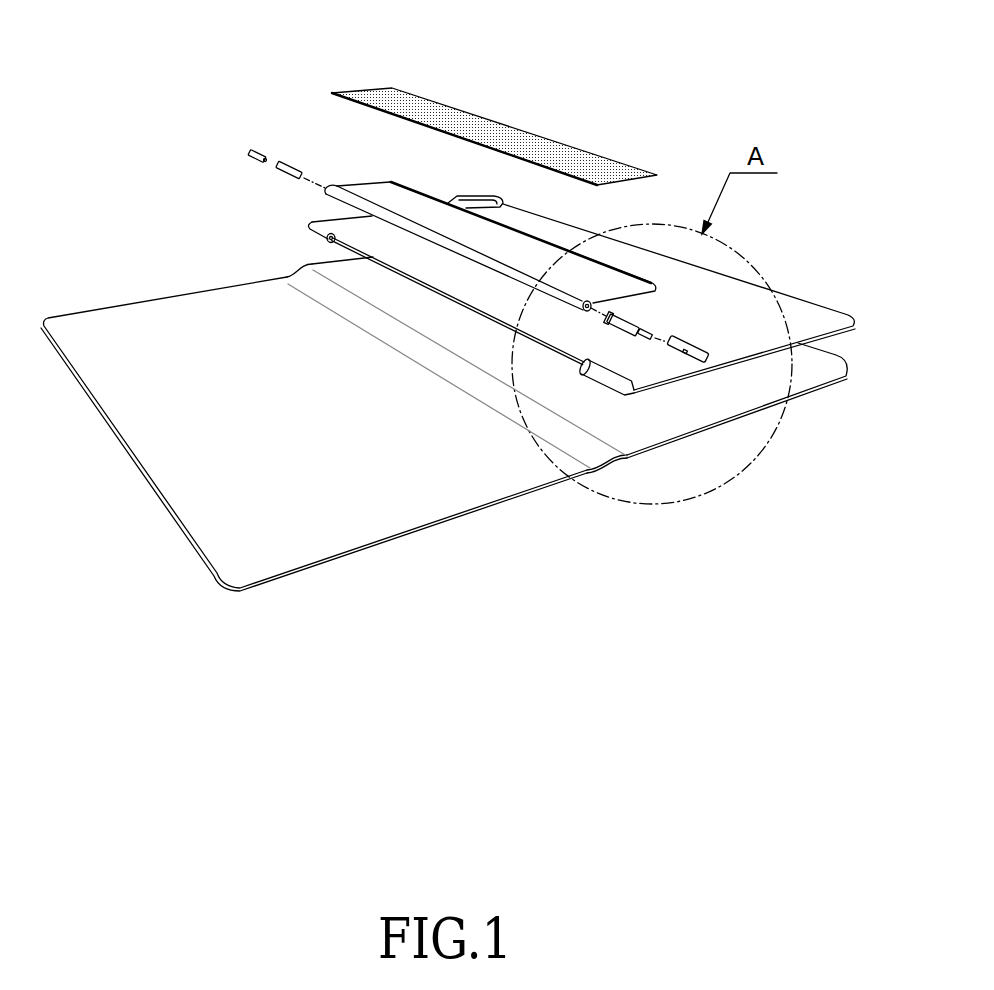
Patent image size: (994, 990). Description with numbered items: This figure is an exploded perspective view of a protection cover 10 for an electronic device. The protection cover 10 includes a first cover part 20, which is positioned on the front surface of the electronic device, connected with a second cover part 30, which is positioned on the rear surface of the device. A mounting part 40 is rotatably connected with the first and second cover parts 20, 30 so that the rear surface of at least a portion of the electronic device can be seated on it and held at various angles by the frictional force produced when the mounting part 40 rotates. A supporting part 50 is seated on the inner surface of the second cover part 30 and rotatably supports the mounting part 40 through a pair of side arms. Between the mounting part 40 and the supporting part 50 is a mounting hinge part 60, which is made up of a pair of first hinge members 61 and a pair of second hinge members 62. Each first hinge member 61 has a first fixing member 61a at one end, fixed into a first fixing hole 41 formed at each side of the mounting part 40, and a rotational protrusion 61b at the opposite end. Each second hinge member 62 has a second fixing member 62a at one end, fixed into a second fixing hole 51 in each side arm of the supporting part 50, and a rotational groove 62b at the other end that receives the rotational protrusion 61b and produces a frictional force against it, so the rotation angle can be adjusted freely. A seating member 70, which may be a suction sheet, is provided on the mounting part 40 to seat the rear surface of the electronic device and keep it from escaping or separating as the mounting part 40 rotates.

The protection cover 10 is at (78, 77).
The first cover part 20 is at (178, 498).
The second cover part 30 is at (822, 372).
The mounting part 40 is at (398, 197).
The first fixing hole 41 is at (582, 364).
The supporting part 50 is at (805, 315).
The second fixing hole 51 is at (330, 242).
The mounting hinge part 60 is at (315, 73).
The first hinge member 61 is at (259, 150).
The first fixing member 61a is at (613, 323).
The rotational protrusion 61b is at (647, 337).
The second hinge member 62 is at (299, 163).
The second fixing member 62a is at (690, 354).
The rotational groove 62b is at (670, 354).
The seating member 70 is at (493, 128).